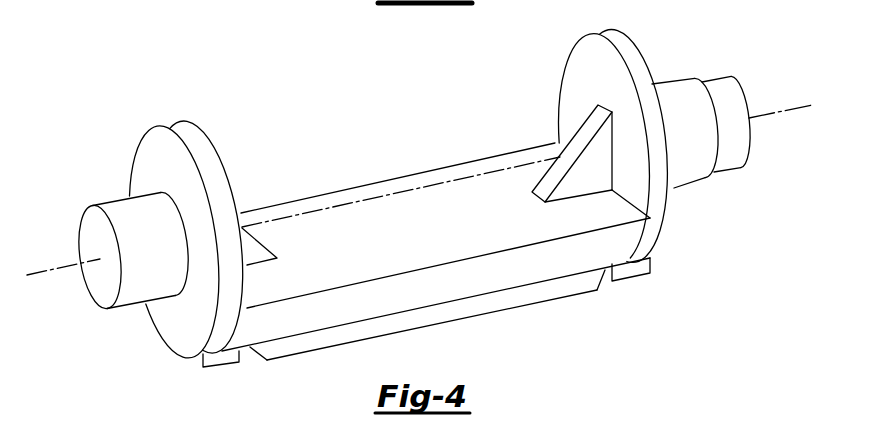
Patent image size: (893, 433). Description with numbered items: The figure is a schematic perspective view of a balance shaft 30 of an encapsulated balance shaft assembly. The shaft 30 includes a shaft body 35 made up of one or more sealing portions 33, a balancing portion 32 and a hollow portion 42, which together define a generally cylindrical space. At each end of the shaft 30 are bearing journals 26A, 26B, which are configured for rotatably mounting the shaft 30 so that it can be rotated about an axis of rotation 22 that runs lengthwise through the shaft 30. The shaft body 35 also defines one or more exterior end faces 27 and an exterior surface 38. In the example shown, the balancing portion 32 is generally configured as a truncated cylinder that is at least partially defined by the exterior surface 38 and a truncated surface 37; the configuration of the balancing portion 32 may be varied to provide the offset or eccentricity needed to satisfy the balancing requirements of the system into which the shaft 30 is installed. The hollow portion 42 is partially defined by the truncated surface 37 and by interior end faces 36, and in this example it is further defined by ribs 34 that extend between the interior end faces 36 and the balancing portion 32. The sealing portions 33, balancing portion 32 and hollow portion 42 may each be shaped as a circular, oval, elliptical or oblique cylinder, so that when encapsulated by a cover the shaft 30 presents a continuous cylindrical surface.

The axis of rotation 22 is at (798, 110).
The bearing journal 26A is at (112, 197).
The bearing journal 26B is at (669, 80).
The exterior end face 27 is at (185, 332).
The shaft 30 is at (780, 64).
The balancing portion 32 is at (412, 329).
The sealing portion 33 is at (160, 126).
The rib 34 is at (272, 249).
The shaft body 35 is at (144, 134).
The interior end face 36 is at (568, 83).
The truncated surface 37 is at (420, 183).
The exterior surface 38 is at (642, 233).
The hollow portion 42 is at (436, 223).